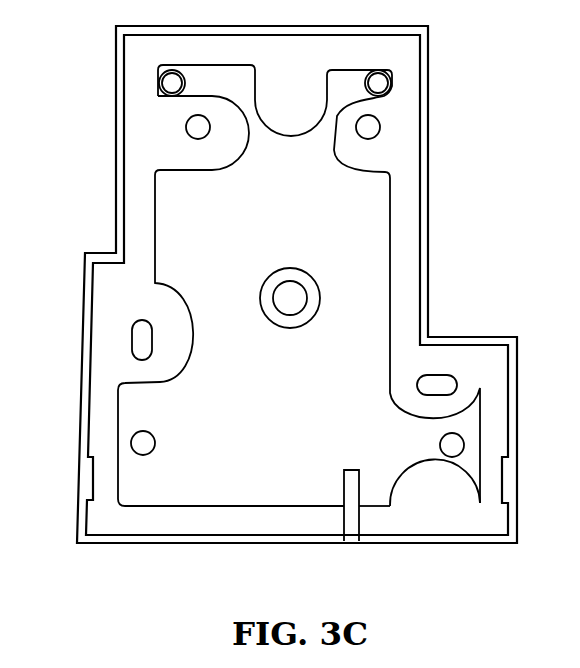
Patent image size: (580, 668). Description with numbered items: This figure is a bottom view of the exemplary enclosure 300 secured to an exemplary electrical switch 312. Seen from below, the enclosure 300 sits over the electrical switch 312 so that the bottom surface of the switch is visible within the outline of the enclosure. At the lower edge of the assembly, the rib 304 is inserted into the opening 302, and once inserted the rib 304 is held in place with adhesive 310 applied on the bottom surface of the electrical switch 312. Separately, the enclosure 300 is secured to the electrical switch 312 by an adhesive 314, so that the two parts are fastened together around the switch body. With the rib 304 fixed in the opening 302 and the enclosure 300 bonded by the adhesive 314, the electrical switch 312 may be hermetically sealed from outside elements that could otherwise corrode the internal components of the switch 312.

The enclosure 300 is at (432, 226).
The opening 302 is at (348, 515).
The rib 304 is at (356, 515).
The adhesive 310 is at (362, 482).
The electrical switch 312 is at (200, 195).
The adhesive 314 is at (148, 102).